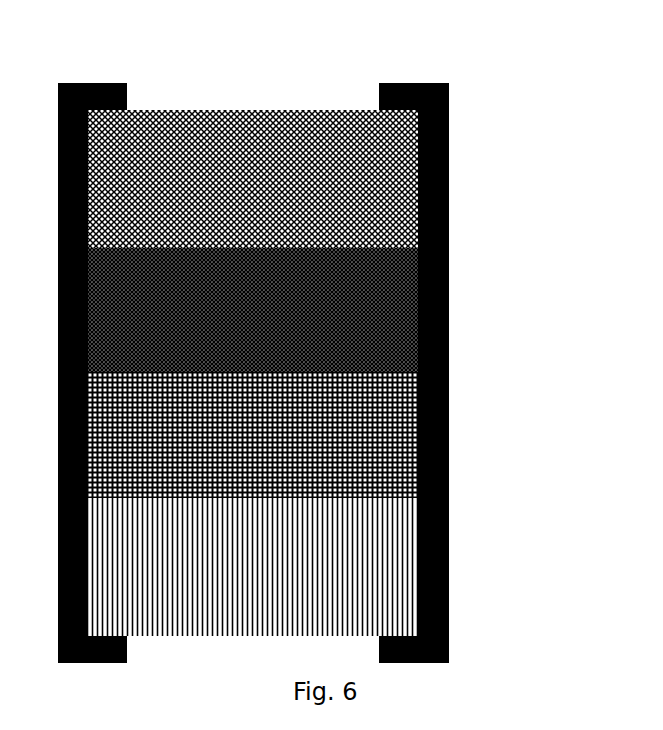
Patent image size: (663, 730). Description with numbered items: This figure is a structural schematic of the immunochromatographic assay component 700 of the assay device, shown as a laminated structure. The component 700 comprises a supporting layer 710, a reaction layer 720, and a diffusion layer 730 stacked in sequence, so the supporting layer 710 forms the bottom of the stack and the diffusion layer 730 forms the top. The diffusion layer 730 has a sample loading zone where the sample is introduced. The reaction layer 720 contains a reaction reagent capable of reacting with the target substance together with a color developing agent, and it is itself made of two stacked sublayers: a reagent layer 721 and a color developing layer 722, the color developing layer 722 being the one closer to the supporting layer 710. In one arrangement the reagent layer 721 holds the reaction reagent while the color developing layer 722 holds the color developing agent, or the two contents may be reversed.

The immunochromatographic assay component 700 is at (310, 339).
The supporting layer 710 is at (373, 570).
The reaction layer 720 is at (325, 373).
The reagent layer 721 is at (449, 289).
The color developing layer 722 is at (449, 406).
The diffusion layer 730 is at (449, 164).